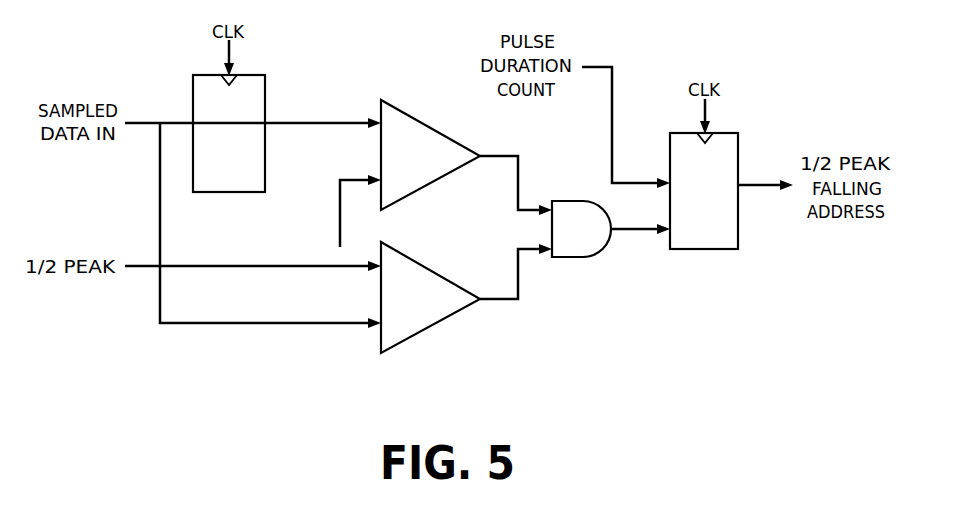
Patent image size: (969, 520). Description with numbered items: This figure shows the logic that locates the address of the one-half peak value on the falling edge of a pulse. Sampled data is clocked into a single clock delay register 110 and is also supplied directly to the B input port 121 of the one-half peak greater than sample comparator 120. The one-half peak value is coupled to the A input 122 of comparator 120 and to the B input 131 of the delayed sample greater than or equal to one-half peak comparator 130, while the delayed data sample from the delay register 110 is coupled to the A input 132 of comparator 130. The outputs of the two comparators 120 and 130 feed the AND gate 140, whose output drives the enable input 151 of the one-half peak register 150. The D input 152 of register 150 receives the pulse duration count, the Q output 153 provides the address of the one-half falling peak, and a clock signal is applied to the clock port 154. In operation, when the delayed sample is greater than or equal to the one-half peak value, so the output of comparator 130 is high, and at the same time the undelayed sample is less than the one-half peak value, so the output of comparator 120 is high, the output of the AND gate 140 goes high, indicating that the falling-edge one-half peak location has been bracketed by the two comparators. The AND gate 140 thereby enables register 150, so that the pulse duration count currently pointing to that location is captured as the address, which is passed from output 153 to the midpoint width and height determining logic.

The single clock delay register 110 is at (250, 75).
The ½ peak greater than sample comparator 120 is at (430, 330).
The B input port of comparator 120 121 is at (379, 328).
The A input of comparator 120 122 is at (378, 271).
The delayed sample greater than or equal to ½ peak comparator 130 is at (430, 124).
The B input of comparator 130 131 is at (380, 184).
The A input of comparator 130 132 is at (379, 121).
The AND gate 140 is at (570, 257).
The ½ peak register 150 is at (706, 250).
The enable input of register 150 151 is at (667, 233).
The D input of register 150 152 is at (666, 181).
The Q output of register 150 153 is at (740, 183).
The clock port of register 150 154 is at (712, 133).